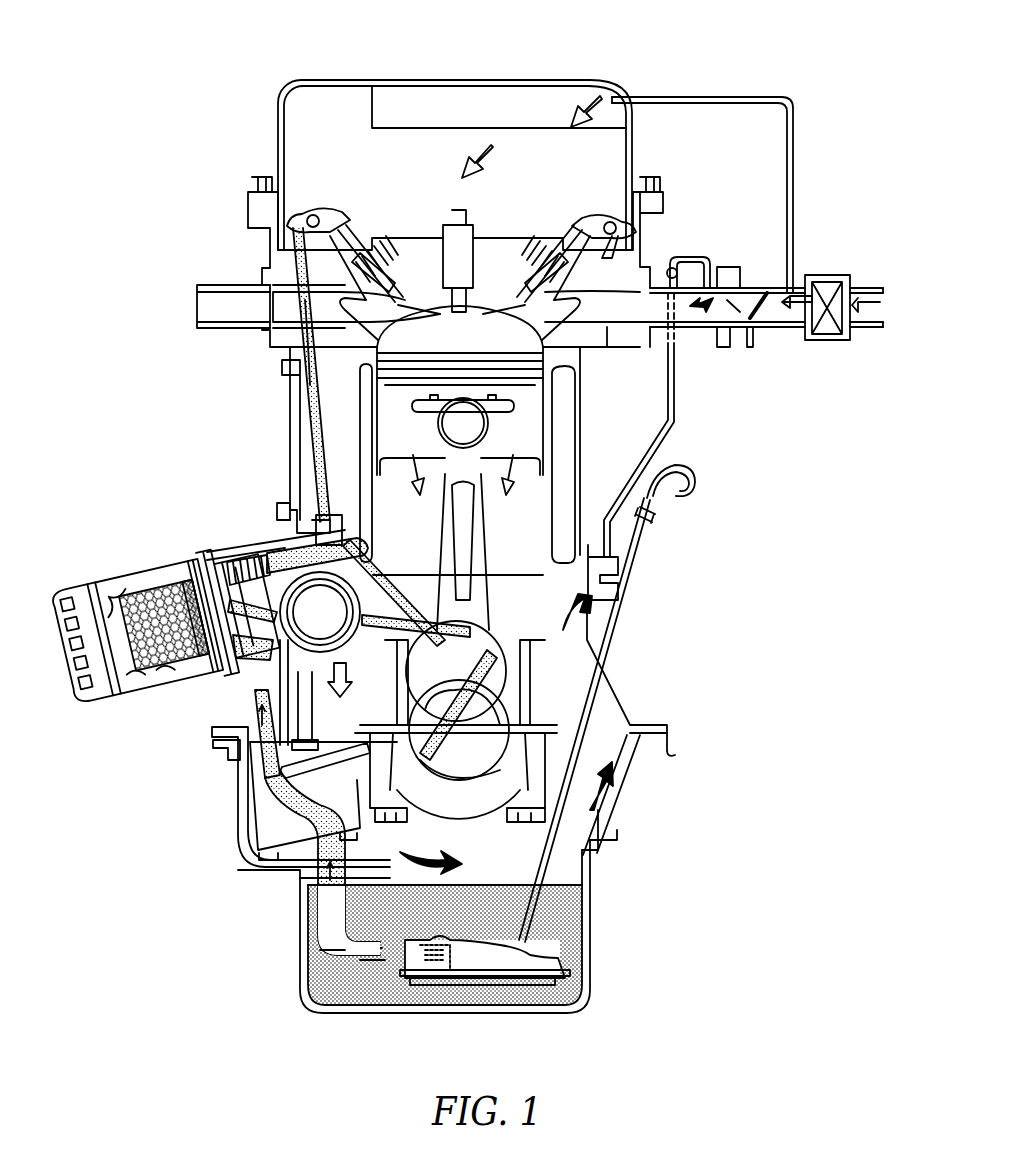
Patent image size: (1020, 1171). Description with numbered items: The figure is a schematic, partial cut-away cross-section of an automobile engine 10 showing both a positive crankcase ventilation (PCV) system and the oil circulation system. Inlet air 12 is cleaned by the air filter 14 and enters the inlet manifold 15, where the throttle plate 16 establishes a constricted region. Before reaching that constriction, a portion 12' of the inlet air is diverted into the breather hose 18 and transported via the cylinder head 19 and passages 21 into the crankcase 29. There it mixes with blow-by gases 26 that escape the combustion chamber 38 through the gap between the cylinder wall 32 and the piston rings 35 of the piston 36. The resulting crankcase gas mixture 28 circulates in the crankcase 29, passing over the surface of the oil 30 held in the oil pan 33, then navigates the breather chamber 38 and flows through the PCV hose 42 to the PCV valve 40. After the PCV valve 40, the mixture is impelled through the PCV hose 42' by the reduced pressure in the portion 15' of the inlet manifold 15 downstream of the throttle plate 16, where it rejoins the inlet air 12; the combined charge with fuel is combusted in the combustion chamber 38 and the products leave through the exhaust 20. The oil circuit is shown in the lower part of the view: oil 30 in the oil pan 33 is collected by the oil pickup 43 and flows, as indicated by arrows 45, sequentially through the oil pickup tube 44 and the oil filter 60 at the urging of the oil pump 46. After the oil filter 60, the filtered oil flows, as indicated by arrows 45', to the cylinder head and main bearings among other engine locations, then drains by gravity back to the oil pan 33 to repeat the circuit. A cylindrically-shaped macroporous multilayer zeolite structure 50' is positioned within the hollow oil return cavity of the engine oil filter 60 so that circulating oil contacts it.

The automobile engine 10 is at (745, 522).
The inlet air 12 is at (863, 350).
The portion of inlet air 12' is at (509, 391).
The air filter 14 is at (830, 342).
The inlet manifold 15 is at (540, 269).
The portion of inlet manifold 15' is at (752, 259).
The throttle plate 16 is at (752, 320).
The breather hose 18 is at (790, 100).
The cylinder head 19 is at (283, 95).
The exhaust 20 is at (213, 285).
The passages 21 is at (292, 470).
The blow-by gases 26 is at (430, 468).
The crankcase gas mixture 28 is at (710, 332).
The crankcase 29 is at (250, 805).
The oil 30 is at (555, 920).
The cylinder wall 32 is at (545, 522).
The oil pan 33 is at (590, 955).
The piston rings 35 is at (548, 372).
The piston 36 is at (460, 421).
The breather chamber / combustion chamber 38 is at (692, 558).
The PCV valve 40 is at (673, 268).
The PCV hose 42 is at (681, 453).
The PCV hose 42' is at (717, 224).
The oil pickup 43 is at (475, 992).
The oil pickup tube 44 is at (318, 950).
The arrows (oil flow) 45 is at (276, 729).
The arrows (filtered oil flow) 45' is at (227, 339).
The oil pump 46 is at (247, 840).
The macroporous multilayer zeolite structure 50' is at (136, 606).
The oil filter 60 is at (68, 700).